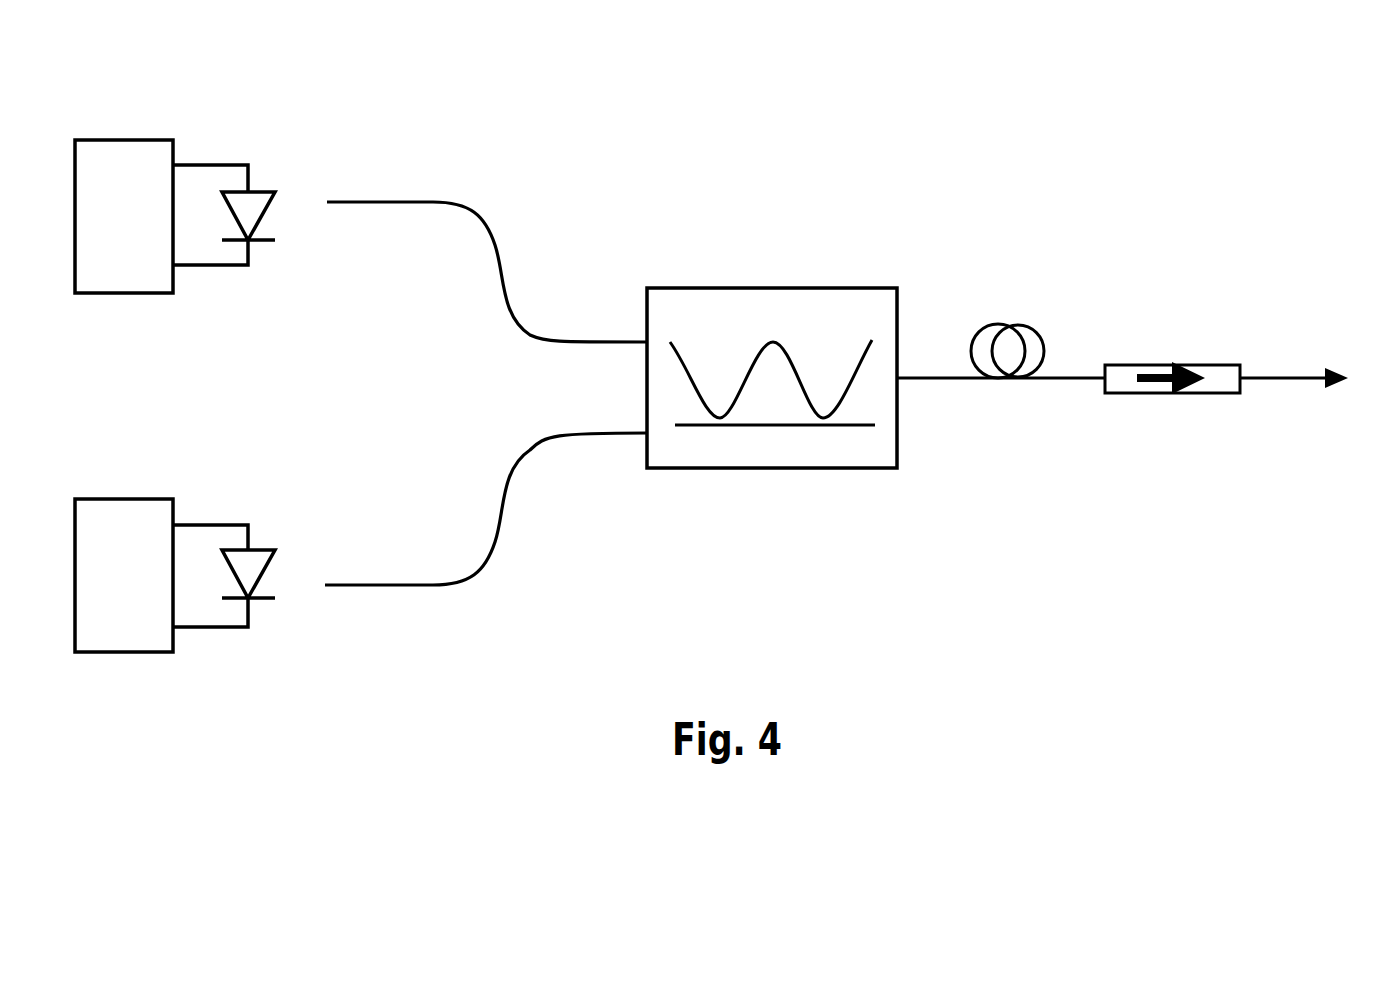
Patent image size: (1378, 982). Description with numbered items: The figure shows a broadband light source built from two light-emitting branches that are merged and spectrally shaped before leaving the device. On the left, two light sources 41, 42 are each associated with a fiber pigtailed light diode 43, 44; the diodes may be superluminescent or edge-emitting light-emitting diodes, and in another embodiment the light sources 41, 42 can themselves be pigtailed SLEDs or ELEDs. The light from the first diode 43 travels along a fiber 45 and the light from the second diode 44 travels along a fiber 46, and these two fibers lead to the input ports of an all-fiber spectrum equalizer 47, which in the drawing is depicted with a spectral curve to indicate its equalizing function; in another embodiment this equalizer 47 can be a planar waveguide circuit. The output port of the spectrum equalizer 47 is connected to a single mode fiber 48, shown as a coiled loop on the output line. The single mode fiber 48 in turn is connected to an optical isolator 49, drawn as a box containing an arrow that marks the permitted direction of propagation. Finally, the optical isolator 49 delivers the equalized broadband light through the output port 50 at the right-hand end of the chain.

The light source 41 is at (124, 216).
The light source 42 is at (124, 575).
The fiber pigtailed light diode 43 is at (290, 134).
The fiber pigtailed light diode 44 is at (292, 517).
The fiber 45 is at (538, 210).
The fiber 46 is at (549, 523).
The all-fiber spectrum equalizer 47 is at (830, 284).
The single mode fiber 48 is at (1020, 296).
The optical isolator 49 is at (1224, 345).
The output port 50 is at (1310, 375).